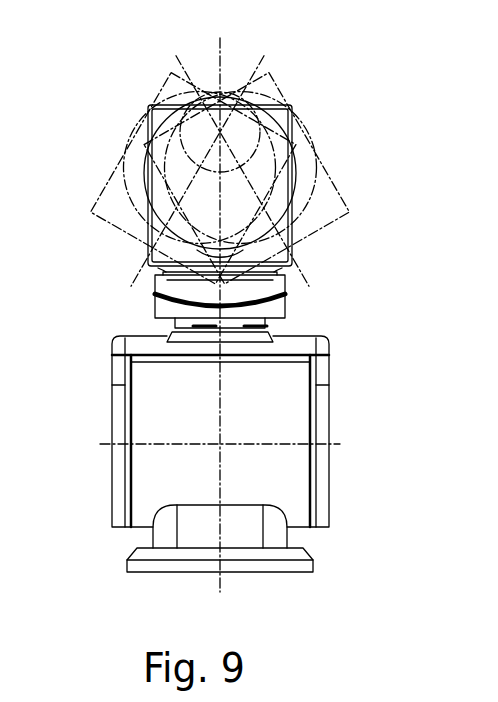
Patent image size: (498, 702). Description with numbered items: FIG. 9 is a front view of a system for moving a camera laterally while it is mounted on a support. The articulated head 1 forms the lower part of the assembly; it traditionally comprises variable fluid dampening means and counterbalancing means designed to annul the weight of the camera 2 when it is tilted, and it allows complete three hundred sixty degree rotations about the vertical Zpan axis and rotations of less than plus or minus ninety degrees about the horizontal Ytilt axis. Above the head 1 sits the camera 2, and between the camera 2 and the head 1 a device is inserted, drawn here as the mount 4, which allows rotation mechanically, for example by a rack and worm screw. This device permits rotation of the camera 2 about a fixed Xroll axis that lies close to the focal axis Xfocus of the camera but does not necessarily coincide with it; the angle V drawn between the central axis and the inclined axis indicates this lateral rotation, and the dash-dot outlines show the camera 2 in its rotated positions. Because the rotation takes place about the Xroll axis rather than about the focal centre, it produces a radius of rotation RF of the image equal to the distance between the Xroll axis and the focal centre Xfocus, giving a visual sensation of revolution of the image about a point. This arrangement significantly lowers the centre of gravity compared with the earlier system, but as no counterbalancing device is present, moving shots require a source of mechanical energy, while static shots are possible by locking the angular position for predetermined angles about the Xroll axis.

The articulated head 1 is at (110, 498).
The camera 2 is at (293, 104).
The tilt mount 4 is at (150, 312).
The roll angle V is at (220, 48).
The Xroll axis Xroll is at (220, 132).
The radius of rotation RF is at (220, 132).
The focal axis Xfocus is at (223, 175).
The Ytilt axis Ytilt is at (109, 443).
The Zpan axis Zpan is at (218, 575).